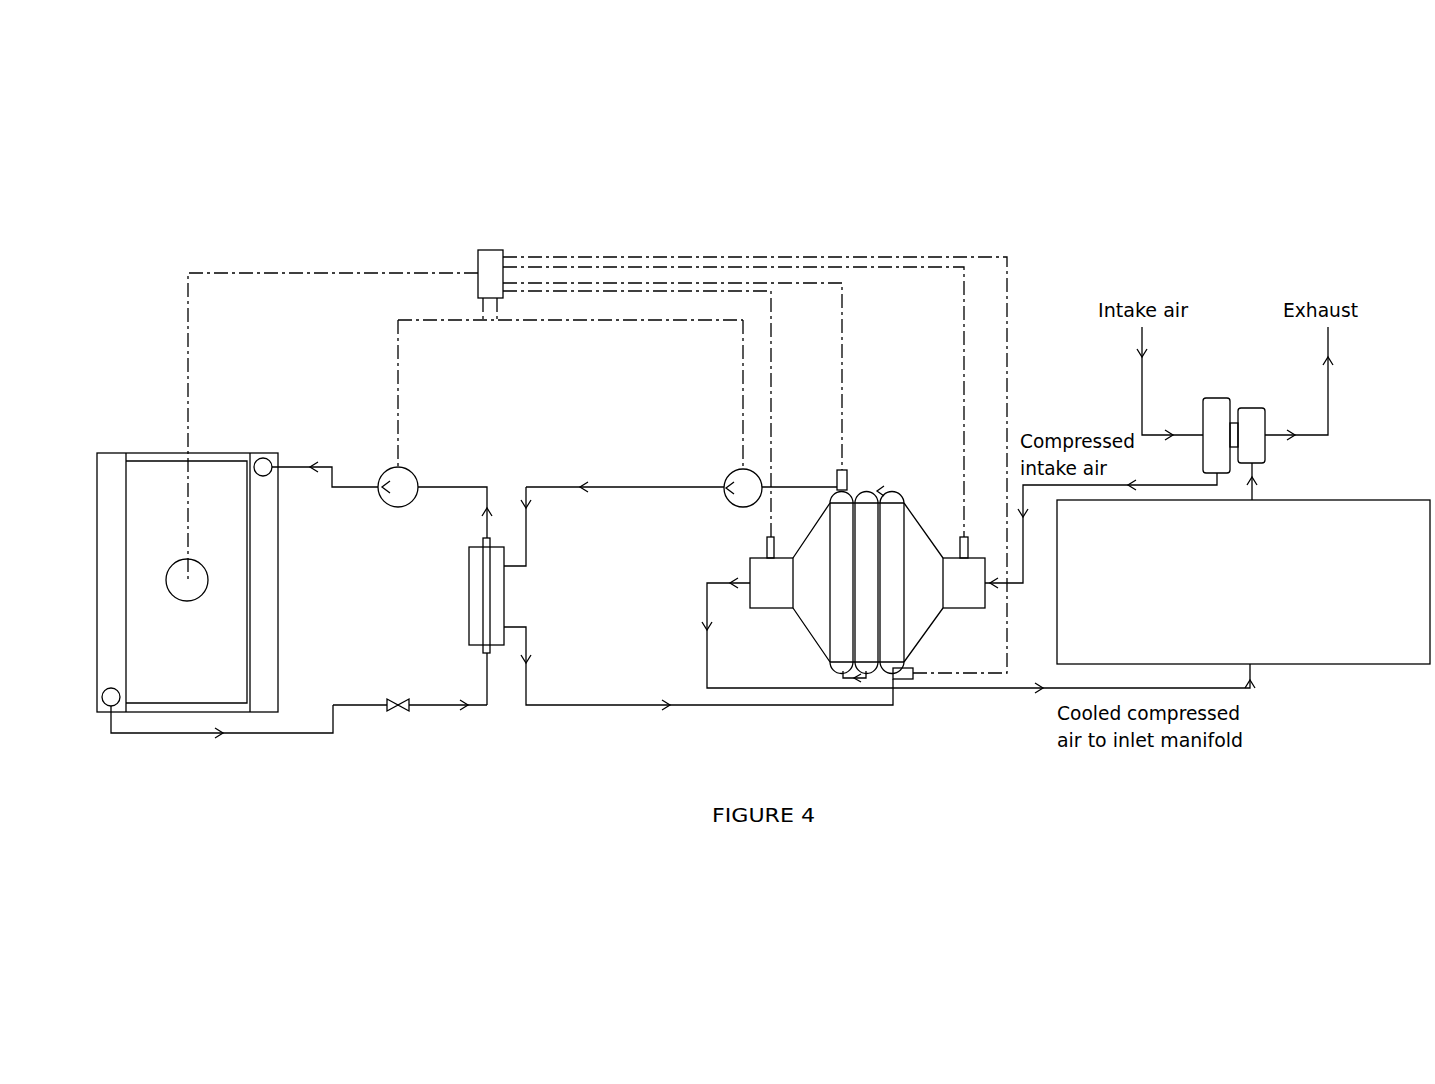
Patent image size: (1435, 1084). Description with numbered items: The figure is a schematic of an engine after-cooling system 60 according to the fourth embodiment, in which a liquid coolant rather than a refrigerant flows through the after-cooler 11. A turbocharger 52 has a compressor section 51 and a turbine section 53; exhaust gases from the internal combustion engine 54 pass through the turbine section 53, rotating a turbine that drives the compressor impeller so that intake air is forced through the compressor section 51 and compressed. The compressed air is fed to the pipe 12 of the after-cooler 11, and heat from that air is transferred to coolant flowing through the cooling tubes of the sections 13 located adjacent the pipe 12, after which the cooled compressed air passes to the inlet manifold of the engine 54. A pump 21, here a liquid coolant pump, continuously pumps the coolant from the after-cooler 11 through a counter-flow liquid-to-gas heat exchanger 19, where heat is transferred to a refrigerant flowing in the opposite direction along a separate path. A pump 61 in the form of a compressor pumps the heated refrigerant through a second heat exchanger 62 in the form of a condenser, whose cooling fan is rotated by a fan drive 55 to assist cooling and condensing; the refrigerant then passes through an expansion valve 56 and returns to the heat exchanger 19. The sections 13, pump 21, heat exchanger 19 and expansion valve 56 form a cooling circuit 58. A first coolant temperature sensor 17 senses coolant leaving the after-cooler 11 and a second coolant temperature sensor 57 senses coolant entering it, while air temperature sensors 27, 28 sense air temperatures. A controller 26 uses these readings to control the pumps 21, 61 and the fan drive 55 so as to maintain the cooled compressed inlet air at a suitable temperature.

The after-cooler 11 is at (873, 567).
The pipe 12 is at (772, 607).
The sections 13 is at (888, 620).
The first coolant temperature sensor 17 is at (835, 467).
The heat exchanger 19 is at (468, 585).
The pump 21 is at (728, 472).
The controller 26 is at (491, 249).
The air temperature sensor 27 is at (763, 543).
The air temperature sensor 28 is at (966, 533).
The compressor section 51 is at (1213, 397).
The turbocharger 52 is at (1237, 380).
The turbine section 53 is at (1250, 407).
The internal combustion engine 54 is at (1243, 582).
The fan drive 55 is at (198, 560).
The expansion valve 56 is at (403, 697).
The second coolant temperature sensor 57 is at (917, 662).
The cooling circuit 58 is at (380, 733).
The engine after-cooling system 60 is at (1032, 333).
The pump 61 is at (395, 507).
The heat exchanger 62 is at (187, 582).